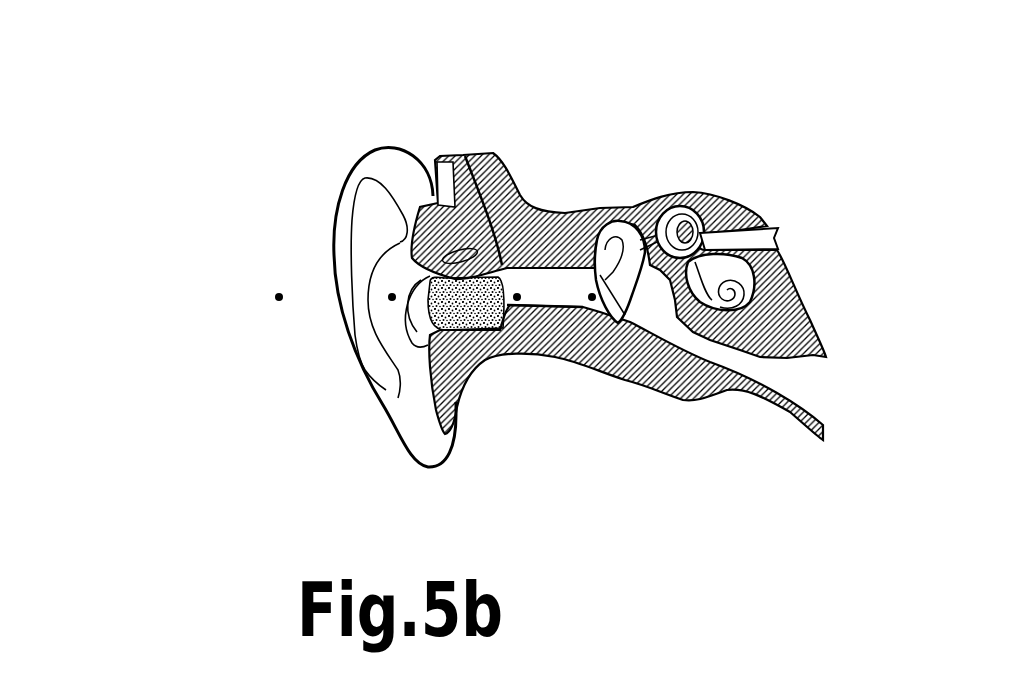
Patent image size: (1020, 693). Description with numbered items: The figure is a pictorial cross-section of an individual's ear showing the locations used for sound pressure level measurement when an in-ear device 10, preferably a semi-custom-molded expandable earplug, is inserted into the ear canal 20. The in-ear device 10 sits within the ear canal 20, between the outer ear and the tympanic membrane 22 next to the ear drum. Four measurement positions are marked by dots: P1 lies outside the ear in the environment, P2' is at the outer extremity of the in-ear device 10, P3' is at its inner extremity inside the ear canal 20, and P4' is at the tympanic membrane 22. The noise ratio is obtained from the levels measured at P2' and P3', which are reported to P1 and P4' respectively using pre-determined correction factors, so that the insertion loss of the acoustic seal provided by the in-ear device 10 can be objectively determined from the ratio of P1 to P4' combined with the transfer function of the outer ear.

The sound pressure level outside the ear P1 is at (279, 297).
The sound pressure level at outer extremity of in-ear device P2' is at (272, 370).
The sound pressure level at inner extremity of in-ear device P3' is at (601, 399).
The sound pressure level at tympanic membrane with in-ear device P4' is at (675, 384).
The in-ear device 10 is at (533, 217).
The ear canal 20 is at (558, 287).
The tympanic membrane 22 is at (697, 193).